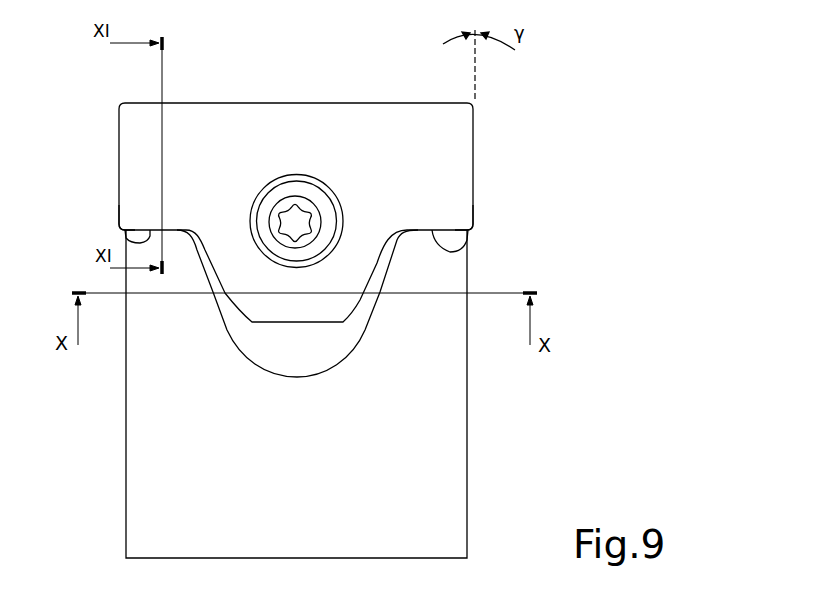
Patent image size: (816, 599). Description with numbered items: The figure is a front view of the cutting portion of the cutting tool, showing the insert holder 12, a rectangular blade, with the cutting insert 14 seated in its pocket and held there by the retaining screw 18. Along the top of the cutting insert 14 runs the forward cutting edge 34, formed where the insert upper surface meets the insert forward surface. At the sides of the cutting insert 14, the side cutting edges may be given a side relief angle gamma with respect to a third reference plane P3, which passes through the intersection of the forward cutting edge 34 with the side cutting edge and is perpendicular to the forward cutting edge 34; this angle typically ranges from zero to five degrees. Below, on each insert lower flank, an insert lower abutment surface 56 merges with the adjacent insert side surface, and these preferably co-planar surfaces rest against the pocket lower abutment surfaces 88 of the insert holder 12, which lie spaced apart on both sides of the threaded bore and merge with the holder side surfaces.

The insert holder 12 is at (420, 432).
The cutting insert 14 is at (436, 160).
The retaining screw 18 is at (310, 223).
The forward cutting edge 34 is at (330, 103).
The insert lower abutment surface 56 is at (147, 240).
The pocket lower abutment surface 88 is at (136, 226).
The third reference plane P3 is at (474, 30).